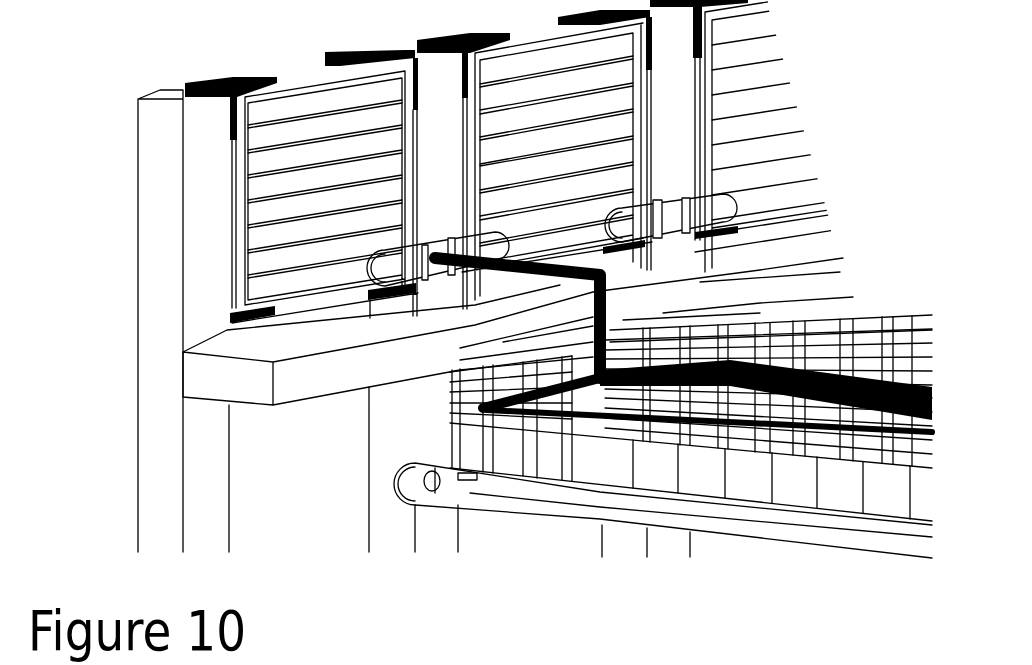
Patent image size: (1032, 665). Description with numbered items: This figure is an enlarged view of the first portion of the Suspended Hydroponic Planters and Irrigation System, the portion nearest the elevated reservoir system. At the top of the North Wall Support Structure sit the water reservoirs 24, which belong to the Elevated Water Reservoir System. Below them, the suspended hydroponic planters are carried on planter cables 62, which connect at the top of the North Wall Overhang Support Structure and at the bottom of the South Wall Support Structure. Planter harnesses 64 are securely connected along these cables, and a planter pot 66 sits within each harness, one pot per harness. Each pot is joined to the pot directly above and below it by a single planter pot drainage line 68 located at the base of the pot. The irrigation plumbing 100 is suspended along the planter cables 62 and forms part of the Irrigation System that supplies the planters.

The water reservoirs 24 is at (295, 97).
The planter cables 62 is at (408, 378).
The planter harnesses 64 is at (560, 428).
The planter pots 66 is at (597, 458).
The planter pot drainage line 68 is at (413, 487).
The irrigation plumbing 100 is at (607, 312).